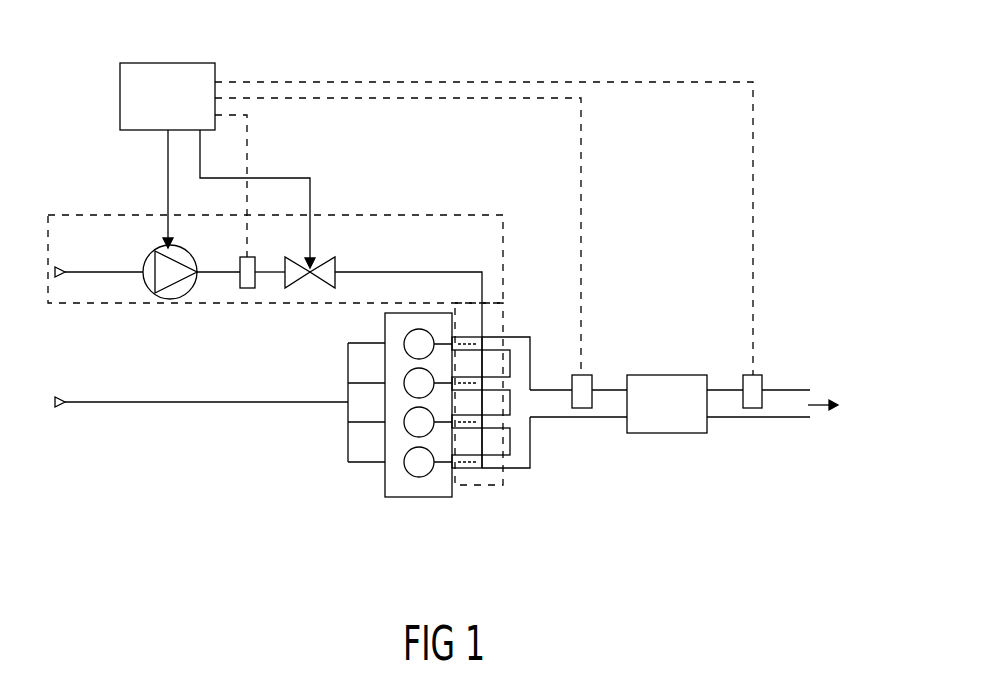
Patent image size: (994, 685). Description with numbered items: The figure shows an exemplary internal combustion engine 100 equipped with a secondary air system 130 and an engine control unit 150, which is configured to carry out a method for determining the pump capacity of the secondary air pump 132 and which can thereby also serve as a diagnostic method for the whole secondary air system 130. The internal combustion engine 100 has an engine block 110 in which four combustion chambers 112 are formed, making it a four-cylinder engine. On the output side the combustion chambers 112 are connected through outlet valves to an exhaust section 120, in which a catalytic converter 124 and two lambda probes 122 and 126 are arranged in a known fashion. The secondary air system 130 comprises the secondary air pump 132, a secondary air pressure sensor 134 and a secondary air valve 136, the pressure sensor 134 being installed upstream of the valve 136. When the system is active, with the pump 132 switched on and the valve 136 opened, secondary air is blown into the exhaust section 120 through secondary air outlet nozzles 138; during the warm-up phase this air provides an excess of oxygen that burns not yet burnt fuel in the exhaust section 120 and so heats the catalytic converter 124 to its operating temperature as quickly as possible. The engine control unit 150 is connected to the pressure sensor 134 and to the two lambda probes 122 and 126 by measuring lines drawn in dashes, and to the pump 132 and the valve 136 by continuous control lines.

The internal combustion engine 100 is at (714, 60).
The engine block 110 is at (440, 497).
The combustion chambers 112 is at (420, 476).
The exhaust section 120 is at (565, 418).
The lambda probe 122 is at (582, 372).
The catalytic converter 124 is at (665, 433).
The lambda probe 126 is at (753, 372).
The secondary air system 130 is at (98, 215).
The secondary air pump 132 is at (172, 300).
The secondary air pressure sensor 134 is at (245, 290).
The secondary air valve 136 is at (310, 290).
The secondary air outlet nozzles 138 is at (482, 318).
The engine control unit 150 is at (190, 113).